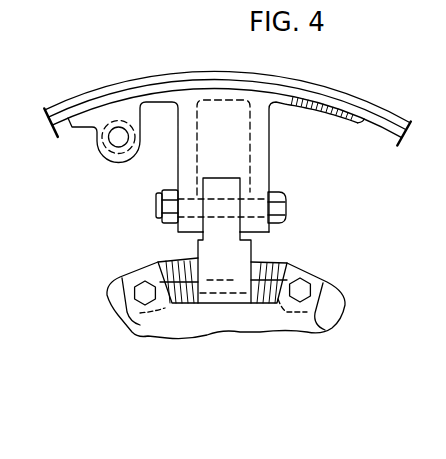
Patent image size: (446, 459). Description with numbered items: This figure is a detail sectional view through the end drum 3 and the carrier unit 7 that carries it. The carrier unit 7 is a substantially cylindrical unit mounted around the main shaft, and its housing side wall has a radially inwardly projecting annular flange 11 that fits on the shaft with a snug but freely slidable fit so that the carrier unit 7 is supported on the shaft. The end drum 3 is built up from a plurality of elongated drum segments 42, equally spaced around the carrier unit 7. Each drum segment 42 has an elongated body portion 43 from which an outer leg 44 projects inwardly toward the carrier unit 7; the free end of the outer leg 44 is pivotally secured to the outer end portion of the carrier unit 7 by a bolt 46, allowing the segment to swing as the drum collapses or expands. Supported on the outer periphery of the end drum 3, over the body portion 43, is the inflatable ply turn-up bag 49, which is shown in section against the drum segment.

The end drum 3 is at (270, 139).
The carrier unit 7 is at (160, 263).
The annular flange 11 is at (202, 247).
The drum segment 42 is at (297, 104).
The body portion 43 is at (340, 104).
The outer leg 44 is at (268, 172).
The bolt 46 is at (285, 225).
The inflatable ply turn-up bag 49 is at (393, 116).